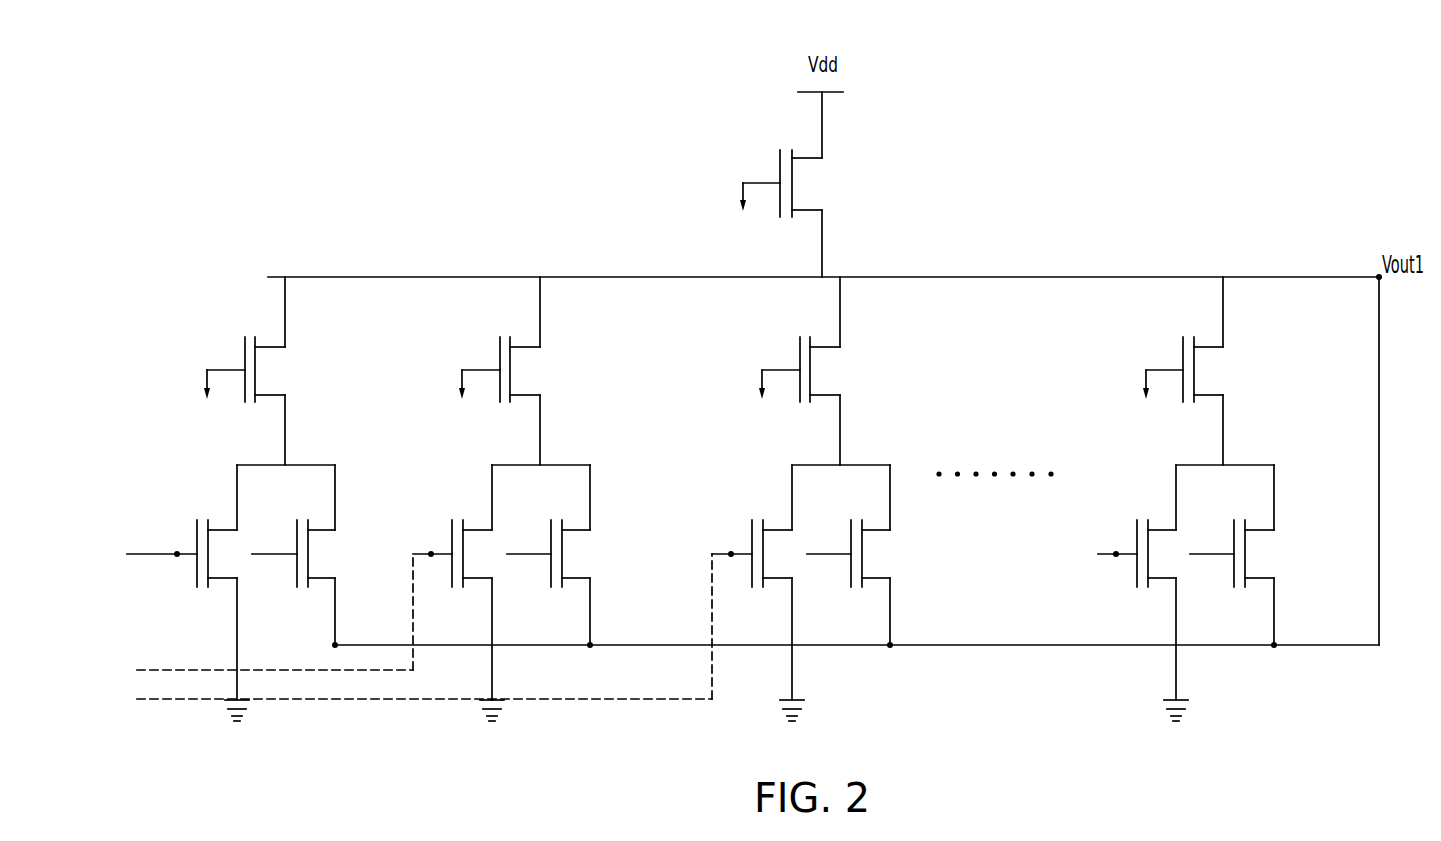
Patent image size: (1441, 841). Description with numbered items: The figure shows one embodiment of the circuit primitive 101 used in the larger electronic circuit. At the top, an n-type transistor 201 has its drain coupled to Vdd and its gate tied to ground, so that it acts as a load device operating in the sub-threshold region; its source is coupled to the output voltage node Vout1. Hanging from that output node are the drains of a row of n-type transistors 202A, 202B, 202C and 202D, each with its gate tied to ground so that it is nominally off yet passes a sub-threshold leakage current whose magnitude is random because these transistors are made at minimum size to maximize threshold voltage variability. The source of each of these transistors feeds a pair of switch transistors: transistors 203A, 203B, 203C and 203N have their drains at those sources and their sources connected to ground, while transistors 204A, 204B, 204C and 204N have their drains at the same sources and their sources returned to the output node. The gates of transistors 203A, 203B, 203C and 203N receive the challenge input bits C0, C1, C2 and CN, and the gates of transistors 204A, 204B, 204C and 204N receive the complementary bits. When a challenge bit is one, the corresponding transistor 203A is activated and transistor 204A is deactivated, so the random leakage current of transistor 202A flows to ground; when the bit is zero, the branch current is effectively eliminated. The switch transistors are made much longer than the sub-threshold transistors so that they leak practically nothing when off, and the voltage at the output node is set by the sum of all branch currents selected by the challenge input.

The circuit primitive 101 is at (1224, 60).
The n-type transistor 201 is at (780, 166).
The n-type transistor 202A is at (245, 345).
The n-type transistor 202B is at (500, 345).
The n-type transistor 202C is at (800, 345).
The n-type transistor 202D is at (1183, 345).
The n-type transistor 203A is at (197, 528).
The n-type transistor 203B is at (452, 528).
The n-type transistor 203C is at (752, 528).
The n-type transistor 203N is at (1137, 528).
The n-type transistor 204A is at (308, 553).
The n-type transistor 204B is at (562, 553).
The n-type transistor 204C is at (862, 553).
The n-type transistor 204N is at (1245, 553).